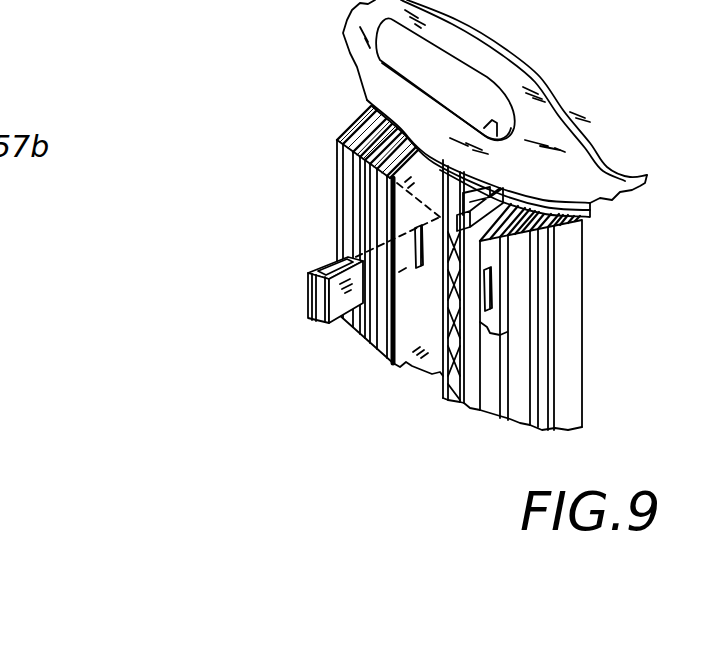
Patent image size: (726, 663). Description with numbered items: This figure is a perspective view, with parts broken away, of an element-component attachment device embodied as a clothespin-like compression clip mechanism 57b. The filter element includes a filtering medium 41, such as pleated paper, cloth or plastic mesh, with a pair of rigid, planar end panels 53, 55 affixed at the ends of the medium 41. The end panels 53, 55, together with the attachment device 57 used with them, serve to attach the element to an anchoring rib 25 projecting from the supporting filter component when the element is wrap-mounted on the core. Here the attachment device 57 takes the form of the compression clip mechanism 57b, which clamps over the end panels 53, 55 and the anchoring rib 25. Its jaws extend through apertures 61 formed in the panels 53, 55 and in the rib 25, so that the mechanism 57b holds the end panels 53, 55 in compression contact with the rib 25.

The anchoring rib 25 is at (418, 340).
The filtering medium 41 is at (533, 368).
The end panel 53 is at (338, 140).
The end panel 55 is at (540, 193).
The attachment device 57 is at (414, 397).
The compression clip mechanism 57b is at (310, 298).
The aperture 61 is at (423, 250).